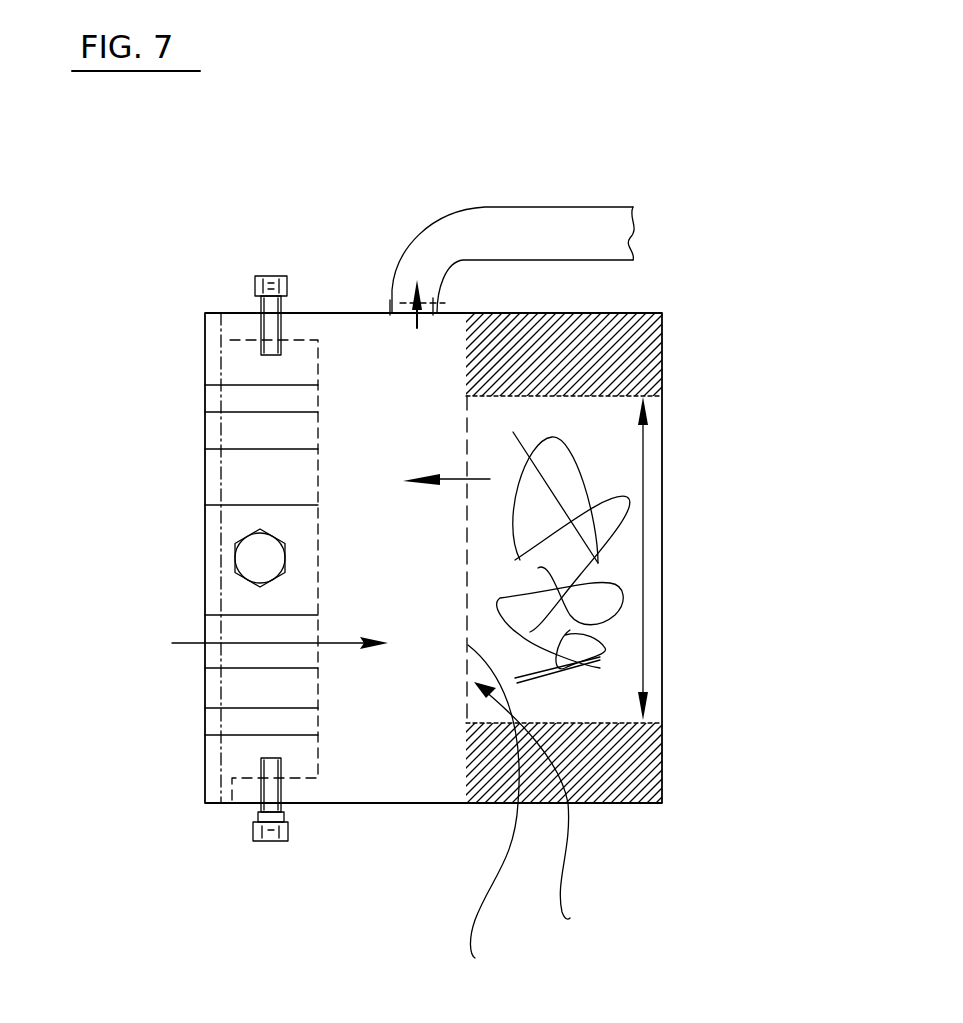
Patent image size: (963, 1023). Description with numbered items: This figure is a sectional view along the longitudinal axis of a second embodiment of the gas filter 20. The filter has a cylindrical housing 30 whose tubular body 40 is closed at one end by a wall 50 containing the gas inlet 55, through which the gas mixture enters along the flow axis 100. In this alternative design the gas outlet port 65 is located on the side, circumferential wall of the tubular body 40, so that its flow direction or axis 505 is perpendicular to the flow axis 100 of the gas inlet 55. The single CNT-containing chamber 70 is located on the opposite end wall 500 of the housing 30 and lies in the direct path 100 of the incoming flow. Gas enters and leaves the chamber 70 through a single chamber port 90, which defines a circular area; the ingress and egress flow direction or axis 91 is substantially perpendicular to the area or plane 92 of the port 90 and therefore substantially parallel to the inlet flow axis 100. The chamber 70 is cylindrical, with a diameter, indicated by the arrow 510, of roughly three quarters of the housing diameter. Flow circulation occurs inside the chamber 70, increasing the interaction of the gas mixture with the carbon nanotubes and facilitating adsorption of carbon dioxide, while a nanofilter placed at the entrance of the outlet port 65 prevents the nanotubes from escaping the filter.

The filter device 20 is at (712, 846).
The cylindrical housing 30 is at (320, 842).
The tubular body 40 is at (348, 313).
The wall 50 is at (245, 355).
The gas inlet 55 is at (232, 718).
The gas outlet port 65 is at (431, 313).
The CNT-containing chamber 70 is at (613, 437).
The chamber port 90 is at (493, 814).
The flow direction or axis 91 is at (440, 482).
The area/plane of the chamber port 92 is at (534, 827).
The flow axis 100 is at (185, 645).
The end wall 500 is at (662, 705).
The flow direction or axis 505 is at (403, 312).
The arrow indicating chamber diameter 510 is at (643, 483).